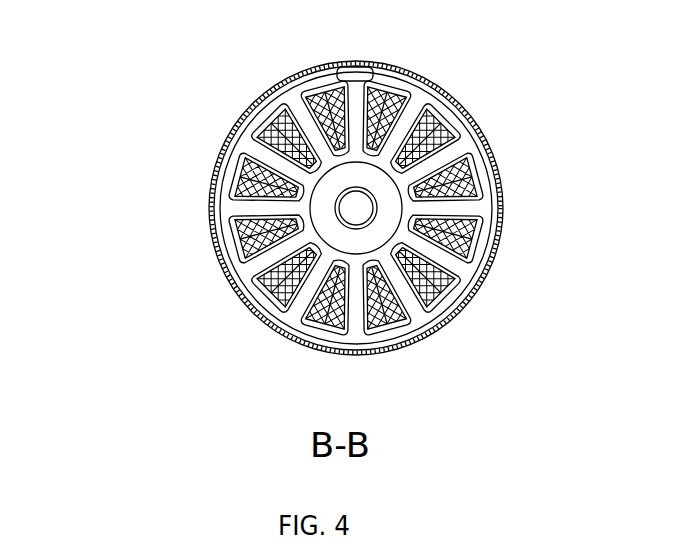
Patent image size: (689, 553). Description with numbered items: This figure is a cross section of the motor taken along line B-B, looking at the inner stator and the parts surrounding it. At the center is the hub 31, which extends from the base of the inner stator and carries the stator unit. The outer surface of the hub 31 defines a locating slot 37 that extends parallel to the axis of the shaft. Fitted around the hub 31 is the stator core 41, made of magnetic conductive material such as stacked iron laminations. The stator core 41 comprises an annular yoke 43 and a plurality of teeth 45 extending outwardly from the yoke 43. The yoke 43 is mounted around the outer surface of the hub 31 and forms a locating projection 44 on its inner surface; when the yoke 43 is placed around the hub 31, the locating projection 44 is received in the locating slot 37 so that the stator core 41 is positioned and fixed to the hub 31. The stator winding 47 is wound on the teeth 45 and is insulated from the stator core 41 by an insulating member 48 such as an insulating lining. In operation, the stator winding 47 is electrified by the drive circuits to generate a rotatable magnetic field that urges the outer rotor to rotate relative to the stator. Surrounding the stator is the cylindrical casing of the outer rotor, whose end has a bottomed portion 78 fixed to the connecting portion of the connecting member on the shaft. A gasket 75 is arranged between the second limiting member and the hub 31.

The hub 31 is at (333, 180).
The locating slot 37 is at (333, 245).
The stator core 41 is at (259, 208).
The yoke 43 is at (305, 188).
The locating projection 44 is at (325, 238).
The teeth 45 is at (93, 107).
The stator winding 47 is at (472, 178).
The insulating member 48 is at (473, 223).
The gasket 75 is at (455, 110).
The bottomed portion 78 is at (363, 64).